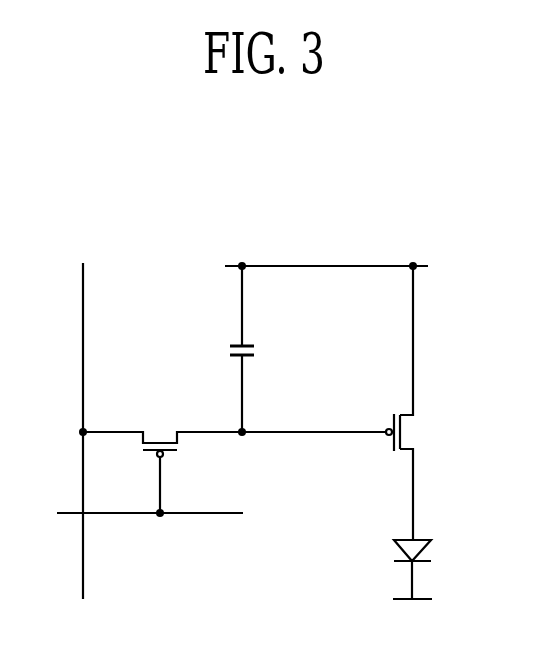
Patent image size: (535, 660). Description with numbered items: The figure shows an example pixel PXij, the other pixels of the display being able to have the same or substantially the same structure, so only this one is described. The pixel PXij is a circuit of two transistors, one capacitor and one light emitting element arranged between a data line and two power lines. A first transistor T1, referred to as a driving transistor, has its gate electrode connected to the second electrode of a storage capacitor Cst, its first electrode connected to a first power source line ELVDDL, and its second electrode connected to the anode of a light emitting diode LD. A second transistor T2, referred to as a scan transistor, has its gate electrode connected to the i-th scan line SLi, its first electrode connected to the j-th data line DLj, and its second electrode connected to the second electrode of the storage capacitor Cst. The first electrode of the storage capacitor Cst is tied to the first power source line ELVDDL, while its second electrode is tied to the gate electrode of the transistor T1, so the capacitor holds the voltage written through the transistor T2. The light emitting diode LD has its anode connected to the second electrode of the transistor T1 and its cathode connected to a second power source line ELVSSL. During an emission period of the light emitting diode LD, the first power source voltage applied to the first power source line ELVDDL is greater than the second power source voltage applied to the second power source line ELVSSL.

The pixel PXij is at (457, 178).
The j-th data line DLj is at (80, 415).
The i-th scan line SLi is at (131, 514).
The first power source line ELVDDL is at (326, 251).
The second power source line ELVSSL is at (416, 616).
The storage capacitor Cst is at (260, 351).
The first transistor (driving transistor) T1 is at (338, 403).
The second transistor (scan transistor) T2 is at (160, 459).
The light emitting diode LD is at (427, 567).